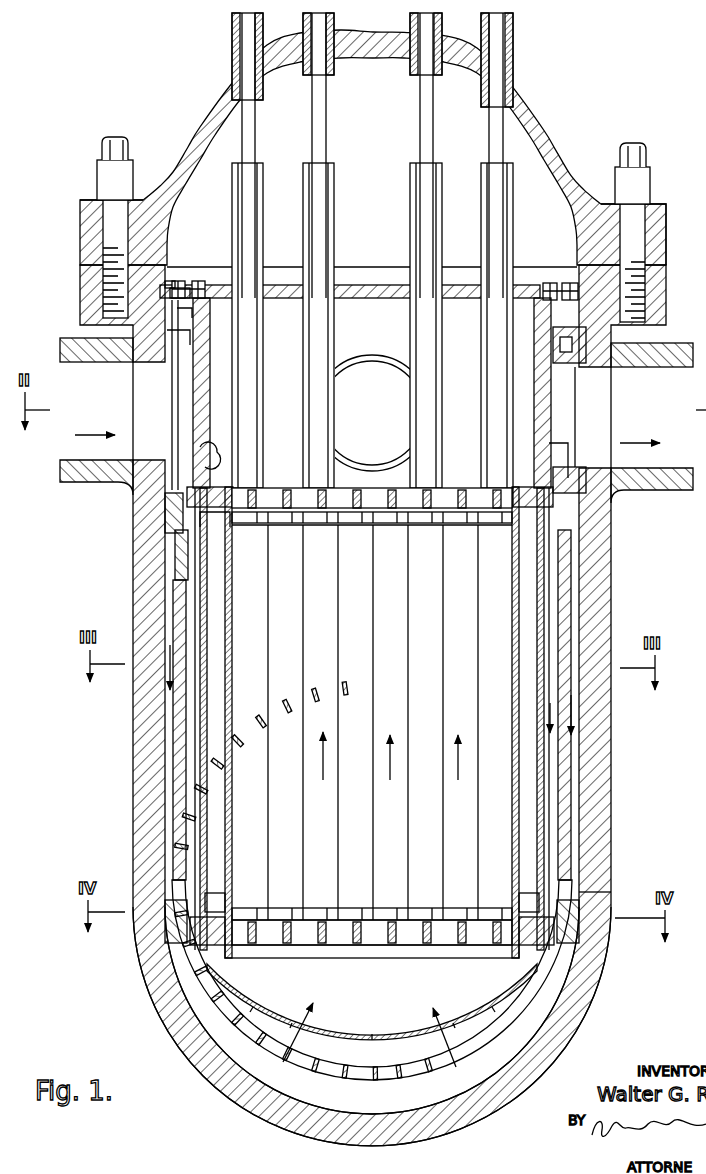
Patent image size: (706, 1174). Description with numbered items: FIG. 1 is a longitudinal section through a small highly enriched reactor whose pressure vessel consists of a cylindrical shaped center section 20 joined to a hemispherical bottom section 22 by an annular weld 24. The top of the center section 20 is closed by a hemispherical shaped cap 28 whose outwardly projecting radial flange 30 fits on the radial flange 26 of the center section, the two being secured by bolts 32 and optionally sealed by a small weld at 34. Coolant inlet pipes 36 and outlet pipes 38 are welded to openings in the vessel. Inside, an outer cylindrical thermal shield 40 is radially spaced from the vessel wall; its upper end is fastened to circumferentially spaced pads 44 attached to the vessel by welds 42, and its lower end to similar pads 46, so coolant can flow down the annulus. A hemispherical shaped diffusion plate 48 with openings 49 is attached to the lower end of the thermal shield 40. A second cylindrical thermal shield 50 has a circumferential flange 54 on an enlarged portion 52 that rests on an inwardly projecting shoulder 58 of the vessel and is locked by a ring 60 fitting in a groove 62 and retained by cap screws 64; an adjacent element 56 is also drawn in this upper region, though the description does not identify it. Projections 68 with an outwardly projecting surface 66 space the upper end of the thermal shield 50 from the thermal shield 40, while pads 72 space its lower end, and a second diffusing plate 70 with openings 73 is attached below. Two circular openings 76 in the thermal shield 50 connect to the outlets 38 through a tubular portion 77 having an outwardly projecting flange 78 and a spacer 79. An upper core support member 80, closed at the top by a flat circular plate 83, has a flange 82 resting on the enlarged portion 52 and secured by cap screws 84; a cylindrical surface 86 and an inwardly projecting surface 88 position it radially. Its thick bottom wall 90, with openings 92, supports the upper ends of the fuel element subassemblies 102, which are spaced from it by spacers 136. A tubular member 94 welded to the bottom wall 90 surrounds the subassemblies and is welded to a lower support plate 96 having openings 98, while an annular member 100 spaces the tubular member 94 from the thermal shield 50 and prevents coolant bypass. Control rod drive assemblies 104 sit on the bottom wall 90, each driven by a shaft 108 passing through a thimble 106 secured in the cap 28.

The cylindrical shaped center section 20 is at (604, 754).
The hemispherical bottom section 22 is at (594, 986).
The annular weld 24 is at (592, 892).
The radial flange 26 is at (660, 297).
The hemispherical shaped cap 28 is at (553, 114).
The radial flange 30 is at (667, 226).
The bolts 32 is at (126, 143).
The weld 34 is at (662, 270).
The coolant inlet pipes 36 is at (97, 484).
The coolant outlet pipes 38 is at (672, 492).
The outer cylindrical thermal shield 40 is at (178, 760).
The welds 42 is at (175, 533).
The pads 44 is at (165, 514).
The pads 46 is at (177, 937).
The hemispherical shaped diffusion plate 48 is at (257, 1041).
The openings 49 is at (284, 1056).
The second cylindrical thermal shield 50 is at (200, 388).
The enlarged portion 52 is at (176, 314).
The circumferential flange 54 is at (172, 295).
The spacer 56 is at (181, 334).
The inwardly projecting shoulder 58 is at (183, 395).
The ring 60 is at (181, 281).
The groove 62 is at (173, 284).
The cap screws 64 is at (569, 284).
The outwardly projecting surface 66 is at (201, 490).
The projections 68 is at (228, 525).
The second diffusing plate 70 is at (333, 1032).
The pads 72 is at (196, 903).
The openings 73 is at (338, 1035).
The circular openings 76 is at (390, 378).
The tubular portion 77 is at (558, 463).
The outwardly projecting flange 78 is at (558, 487).
The spacer 79 is at (580, 370).
The upper core support member 80 is at (205, 364).
The outwardly projecting flange 82 is at (202, 280).
The flat circular plate 83 is at (386, 287).
The cap screws 84 is at (550, 284).
The outwardly projecting cylindrical surface 86 is at (220, 281).
The inwardly projecting surface 88 is at (207, 452).
The bottom wall 90 is at (526, 492).
The openings 92 is at (441, 497).
The tubular member 94 is at (514, 680).
The lower support plate 96 is at (421, 946).
The openings 98 is at (438, 943).
The annular member 100 is at (518, 957).
The fuel element subassemblies 102 is at (405, 661).
The control rod drive assemblies 104 is at (264, 175).
The thimble 106 is at (233, 43).
The shaft 108 is at (255, 118).
The spacer 136 is at (258, 513).